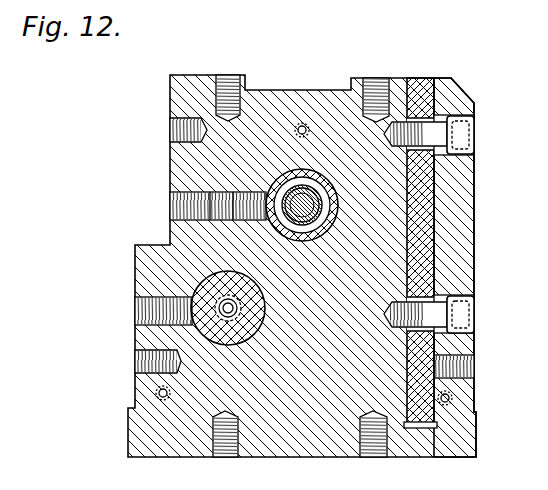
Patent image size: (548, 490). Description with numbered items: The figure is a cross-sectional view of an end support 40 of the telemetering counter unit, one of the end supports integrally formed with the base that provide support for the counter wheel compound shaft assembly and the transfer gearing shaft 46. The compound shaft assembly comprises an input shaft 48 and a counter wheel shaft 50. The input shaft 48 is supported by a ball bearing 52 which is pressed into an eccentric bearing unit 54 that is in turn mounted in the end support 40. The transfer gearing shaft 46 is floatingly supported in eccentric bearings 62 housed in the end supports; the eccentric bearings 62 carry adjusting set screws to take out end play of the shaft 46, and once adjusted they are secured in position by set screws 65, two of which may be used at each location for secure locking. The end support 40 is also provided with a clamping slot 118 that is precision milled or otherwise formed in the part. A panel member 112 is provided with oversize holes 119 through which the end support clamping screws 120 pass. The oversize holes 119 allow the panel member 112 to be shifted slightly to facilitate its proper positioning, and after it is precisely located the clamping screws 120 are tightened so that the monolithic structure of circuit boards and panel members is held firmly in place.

The end support 40 is at (172, 88).
The transfer gearing shaft 46 is at (224, 307).
The input shaft 48 is at (268, 183).
The counter wheel shaft 50 is at (270, 170).
The ball bearing 52 is at (318, 218).
The eccentric bearing unit 54 is at (312, 228).
The eccentric bearing 62 is at (222, 275).
The set screw 65 is at (247, 201).
The panel member 112 is at (430, 216).
The clamping slot 118 is at (431, 80).
The oversize hole 119 is at (425, 161).
The clamping screw 120 is at (462, 137).